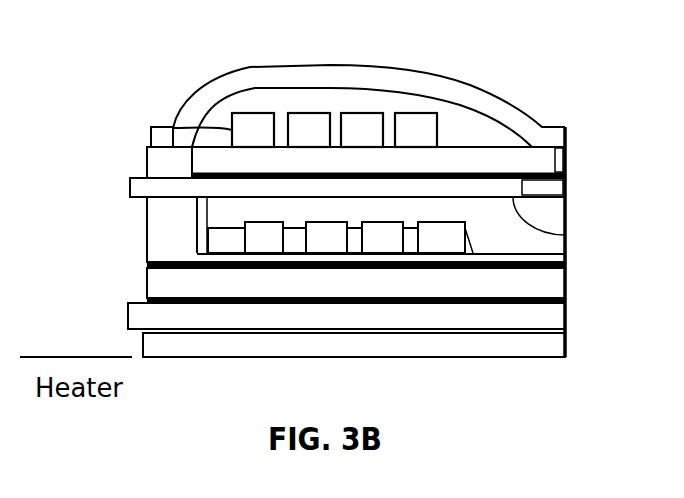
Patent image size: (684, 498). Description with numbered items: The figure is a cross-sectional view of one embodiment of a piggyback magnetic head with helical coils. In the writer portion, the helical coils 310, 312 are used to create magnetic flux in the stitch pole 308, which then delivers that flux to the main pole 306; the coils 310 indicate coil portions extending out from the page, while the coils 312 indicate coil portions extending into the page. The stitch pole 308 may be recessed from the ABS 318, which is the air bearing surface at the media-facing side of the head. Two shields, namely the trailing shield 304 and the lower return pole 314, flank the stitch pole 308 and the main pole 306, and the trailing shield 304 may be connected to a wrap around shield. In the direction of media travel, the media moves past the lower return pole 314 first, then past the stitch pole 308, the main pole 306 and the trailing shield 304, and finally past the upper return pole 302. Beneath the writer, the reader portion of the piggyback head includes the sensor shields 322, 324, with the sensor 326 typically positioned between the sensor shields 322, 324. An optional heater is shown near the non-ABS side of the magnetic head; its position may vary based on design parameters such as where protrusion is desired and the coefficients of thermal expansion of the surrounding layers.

The upper return pole 302 is at (497, 100).
The trailing shield 304 is at (566, 160).
The main pole 306 is at (566, 186).
The stitch pole 308 is at (567, 235).
The helical coils 310 is at (173, 128).
The helical coils 312 is at (245, 217).
The lower return pole 314 is at (393, 289).
The ABS 318 is at (572, 268).
The sensor shield 322 is at (128, 312).
The sensor shield 324 is at (143, 342).
The sensor 326 is at (556, 328).